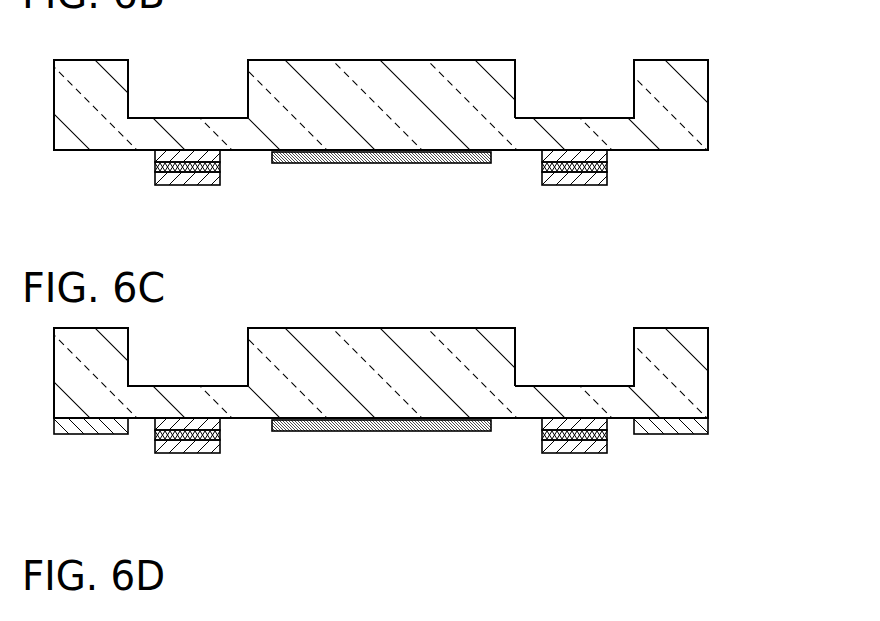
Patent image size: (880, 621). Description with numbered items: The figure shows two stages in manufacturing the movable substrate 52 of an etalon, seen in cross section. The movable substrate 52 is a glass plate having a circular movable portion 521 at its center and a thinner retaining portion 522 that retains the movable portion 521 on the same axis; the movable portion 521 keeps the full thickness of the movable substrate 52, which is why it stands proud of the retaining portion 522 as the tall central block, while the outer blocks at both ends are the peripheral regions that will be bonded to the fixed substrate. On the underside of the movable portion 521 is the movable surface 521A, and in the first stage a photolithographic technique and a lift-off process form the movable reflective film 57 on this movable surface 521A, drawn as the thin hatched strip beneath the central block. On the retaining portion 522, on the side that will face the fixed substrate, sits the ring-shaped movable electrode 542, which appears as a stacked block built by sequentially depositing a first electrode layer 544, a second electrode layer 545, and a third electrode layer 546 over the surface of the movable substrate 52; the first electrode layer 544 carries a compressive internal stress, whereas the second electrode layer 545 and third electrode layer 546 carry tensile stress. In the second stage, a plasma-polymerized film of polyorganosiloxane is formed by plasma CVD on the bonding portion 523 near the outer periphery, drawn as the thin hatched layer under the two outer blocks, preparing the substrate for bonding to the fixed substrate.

In FIG. 6C, the movable substrate 52 is at (705, 117).
In FIG. 6D, the movable substrate 52 is at (403, 373).
In FIG. 6C, the movable portion 521 is at (448, 60).
In FIG. 6D, the movable portion 521 is at (381, 326).
In FIG. 6C, the movable surface 521A is at (388, 164).
In FIG. 6D, the movable surface 521A is at (380, 458).
In FIG. 6C, the retaining portion 522 is at (573, 118).
In FIG. 6D, the retaining portion 522 is at (574, 351).
In FIG. 6D, the bonding portion 523 is at (381, 457).
In FIG. 6C, the movable electrode 542 is at (122, 204).
In FIG. 6D, the movable electrode 542 is at (122, 481).
In FIG. 6C, the first electrode layer 544 is at (155, 156).
In FIG. 6D, the first electrode layer 544 is at (151, 446).
In FIG. 6C, the second electrode layer 545 is at (155, 166).
In FIG. 6D, the second electrode layer 545 is at (151, 469).
In FIG. 6C, the third electrode layer 546 is at (155, 176).
In FIG. 6D, the third electrode layer 546 is at (151, 492).
In FIG. 6C, the movable reflective film 57 is at (330, 164).
In FIG. 6D, the movable reflective film 57 is at (381, 467).